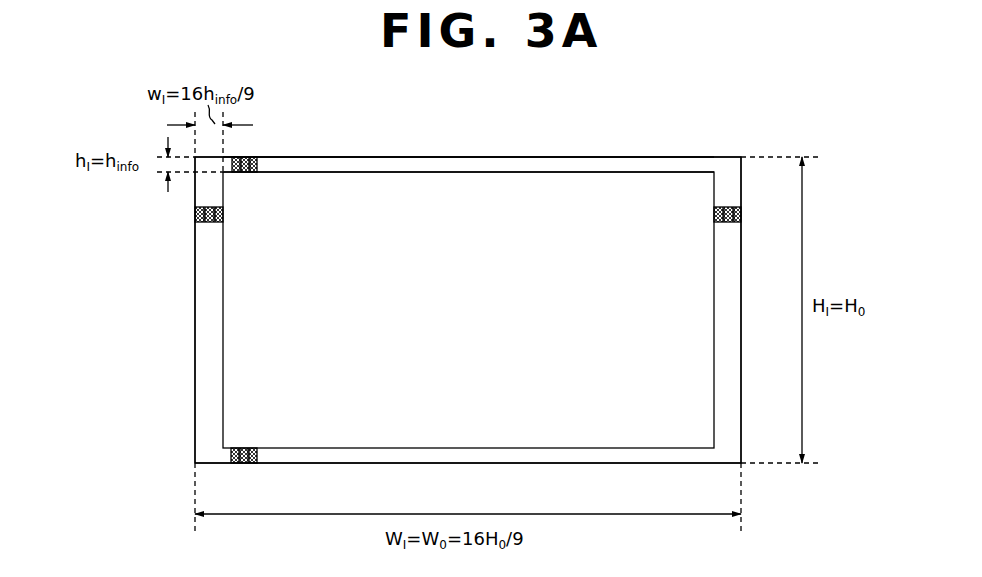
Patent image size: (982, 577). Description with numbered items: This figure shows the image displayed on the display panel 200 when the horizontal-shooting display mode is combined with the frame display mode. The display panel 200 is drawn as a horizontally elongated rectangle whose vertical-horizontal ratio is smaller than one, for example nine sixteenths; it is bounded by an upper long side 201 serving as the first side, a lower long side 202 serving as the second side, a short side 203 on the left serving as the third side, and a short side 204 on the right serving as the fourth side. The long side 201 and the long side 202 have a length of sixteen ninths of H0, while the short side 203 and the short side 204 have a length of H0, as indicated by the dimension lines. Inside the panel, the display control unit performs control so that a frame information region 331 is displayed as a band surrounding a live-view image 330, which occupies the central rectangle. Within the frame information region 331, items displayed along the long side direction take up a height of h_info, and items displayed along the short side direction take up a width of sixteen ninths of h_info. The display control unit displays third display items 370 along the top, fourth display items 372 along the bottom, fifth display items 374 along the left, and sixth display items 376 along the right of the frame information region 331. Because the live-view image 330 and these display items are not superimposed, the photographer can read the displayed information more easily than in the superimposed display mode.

The display panel 200 is at (699, 130).
The long side 201 is at (615, 157).
The long side 202 is at (578, 463).
The short side 203 is at (195, 333).
The short side 204 is at (742, 373).
The live-view image 330 is at (535, 172).
The frame information region 331 is at (438, 160).
The third display items 370 is at (247, 172).
The fourth display items 372 is at (245, 448).
The fifth display items 374 is at (210, 222).
The sixth display items 376 is at (727, 222).